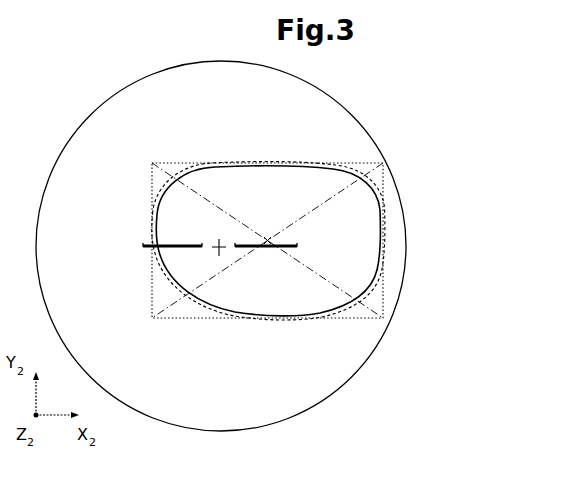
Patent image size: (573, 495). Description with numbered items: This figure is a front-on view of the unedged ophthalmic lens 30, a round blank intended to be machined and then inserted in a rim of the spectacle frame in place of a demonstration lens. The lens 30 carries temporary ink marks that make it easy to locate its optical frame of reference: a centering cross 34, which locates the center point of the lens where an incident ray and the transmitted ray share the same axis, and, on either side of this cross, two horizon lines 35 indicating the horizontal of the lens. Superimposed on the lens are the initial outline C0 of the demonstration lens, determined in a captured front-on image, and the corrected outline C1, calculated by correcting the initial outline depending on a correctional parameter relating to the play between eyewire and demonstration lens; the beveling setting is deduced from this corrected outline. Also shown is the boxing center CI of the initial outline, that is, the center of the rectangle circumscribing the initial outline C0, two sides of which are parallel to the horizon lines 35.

The unedged ophthalmic lens 30 is at (340, 104).
The centering cross 34 is at (230, 243).
The horizon lines 35 is at (200, 245).
The initial outline C0 is at (187, 163).
The corrected outline C1 is at (266, 165).
The boxing center CI is at (267, 239).